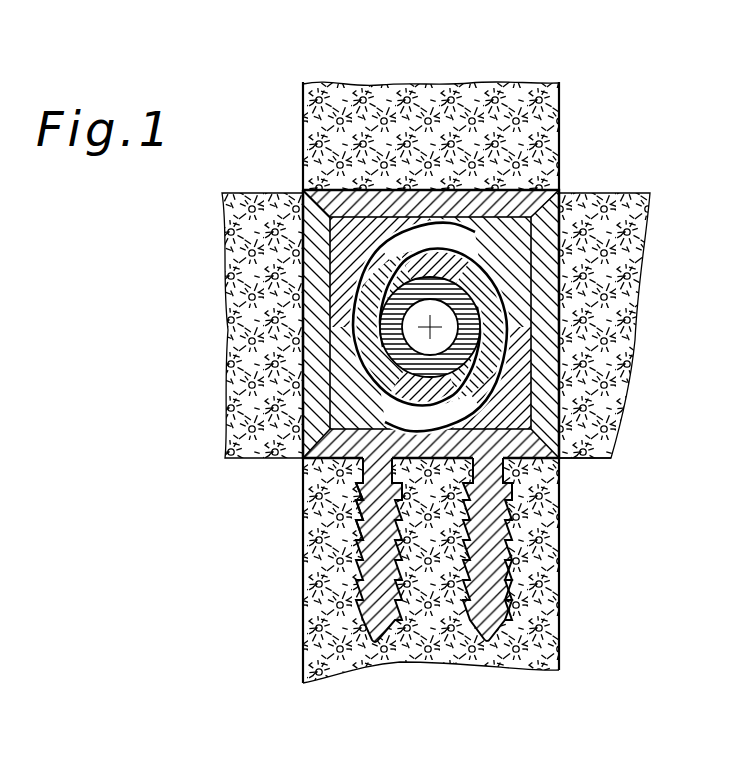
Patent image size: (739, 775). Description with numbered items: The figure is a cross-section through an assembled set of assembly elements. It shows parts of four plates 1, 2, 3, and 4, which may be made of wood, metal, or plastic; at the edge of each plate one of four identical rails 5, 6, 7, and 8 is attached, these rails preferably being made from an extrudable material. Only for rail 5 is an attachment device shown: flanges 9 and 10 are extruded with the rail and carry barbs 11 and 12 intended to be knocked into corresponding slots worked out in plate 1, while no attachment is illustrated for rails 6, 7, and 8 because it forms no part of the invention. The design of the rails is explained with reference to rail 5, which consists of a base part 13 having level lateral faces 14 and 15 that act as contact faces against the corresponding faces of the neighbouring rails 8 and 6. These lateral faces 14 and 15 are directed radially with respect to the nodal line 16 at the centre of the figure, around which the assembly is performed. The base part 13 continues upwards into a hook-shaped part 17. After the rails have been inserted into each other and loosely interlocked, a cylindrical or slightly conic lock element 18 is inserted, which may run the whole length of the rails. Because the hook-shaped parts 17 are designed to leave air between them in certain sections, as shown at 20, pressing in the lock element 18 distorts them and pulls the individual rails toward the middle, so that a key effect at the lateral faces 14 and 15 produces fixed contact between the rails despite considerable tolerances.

The plate 1 is at (553, 615).
The plate 2 is at (633, 311).
The plate 3 is at (440, 95).
The plate 4 is at (237, 240).
The rail 5 is at (497, 433).
The rail 6 is at (522, 308).
The rail 7 is at (407, 190).
The rail 8 is at (313, 330).
The flange 9 is at (377, 578).
The flange 10 is at (505, 537).
The barb 11 is at (363, 522).
The barb 12 is at (510, 580).
The base part 13 is at (345, 442).
The lateral face 14 is at (303, 435).
The lateral face 15 is at (605, 459).
The nodal line 16 is at (433, 317).
The hook-shaped part 17 is at (513, 277).
The lock element 18 is at (505, 332).
The air section 20 is at (505, 278).